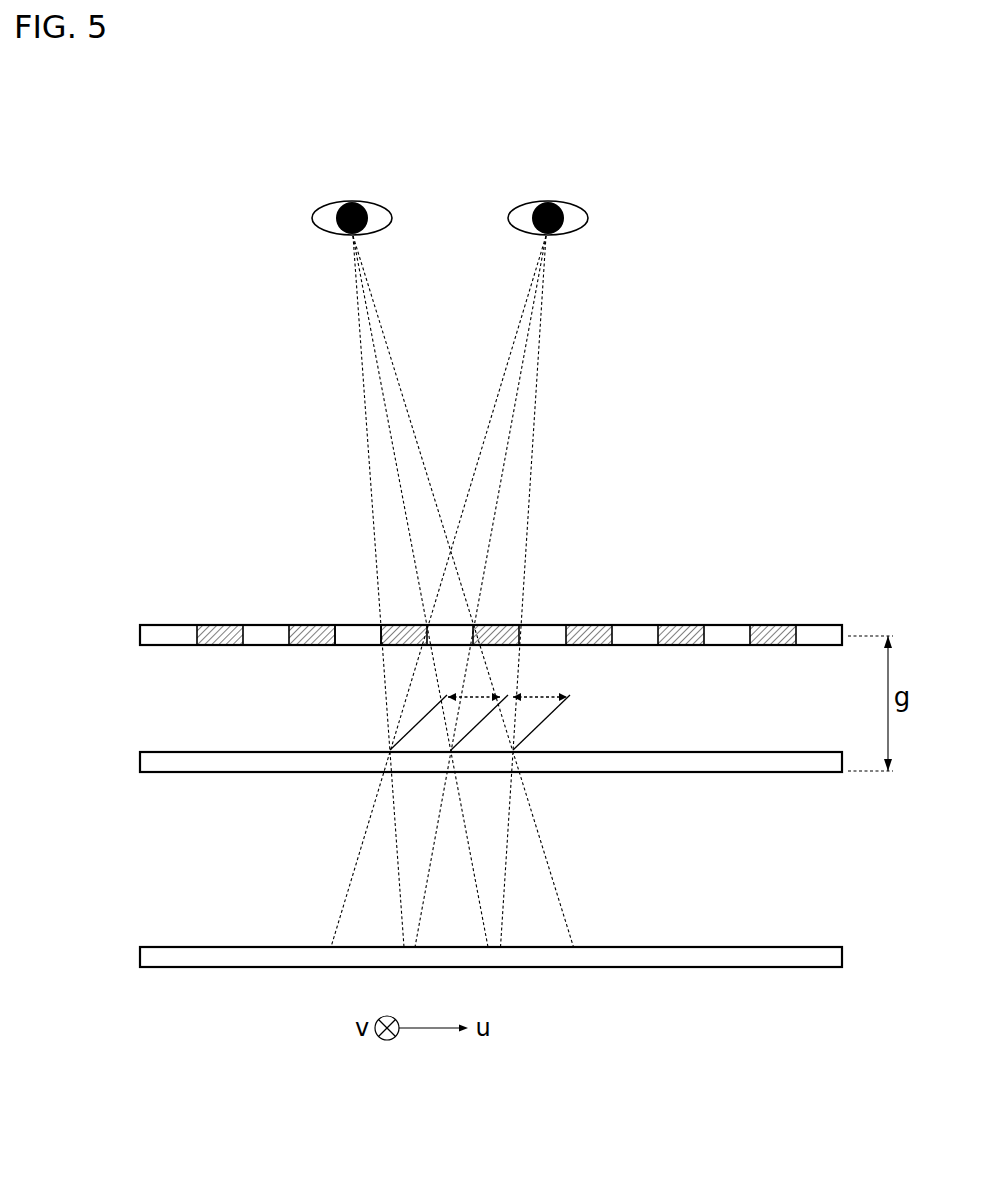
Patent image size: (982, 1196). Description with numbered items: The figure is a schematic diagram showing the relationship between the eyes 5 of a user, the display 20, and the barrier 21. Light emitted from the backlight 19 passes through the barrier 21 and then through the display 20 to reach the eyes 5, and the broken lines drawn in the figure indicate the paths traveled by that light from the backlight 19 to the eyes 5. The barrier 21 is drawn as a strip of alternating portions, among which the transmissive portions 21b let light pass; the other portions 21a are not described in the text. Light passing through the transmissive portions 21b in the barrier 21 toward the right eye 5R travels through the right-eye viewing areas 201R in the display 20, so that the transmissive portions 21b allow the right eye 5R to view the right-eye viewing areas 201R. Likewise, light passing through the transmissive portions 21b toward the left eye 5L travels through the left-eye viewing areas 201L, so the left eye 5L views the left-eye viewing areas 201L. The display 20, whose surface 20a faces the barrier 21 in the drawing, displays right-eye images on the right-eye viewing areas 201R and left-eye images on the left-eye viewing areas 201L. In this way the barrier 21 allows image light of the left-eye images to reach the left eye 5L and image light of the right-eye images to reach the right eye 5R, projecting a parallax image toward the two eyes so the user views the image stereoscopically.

The eyes 5 is at (380, 115).
The right eye 5R is at (368, 203).
The left eye 5L is at (530, 203).
The barrier 21 is at (140, 633).
The light blocking portion 21a is at (390, 626).
The transmissive portions 21b is at (358, 626).
The display 20 is at (140, 759).
The display surface 20a is at (284, 751).
The left-eye viewing areas 201L is at (480, 692).
The right-eye viewing areas 201R is at (540, 695).
The backlight 19 is at (140, 954).